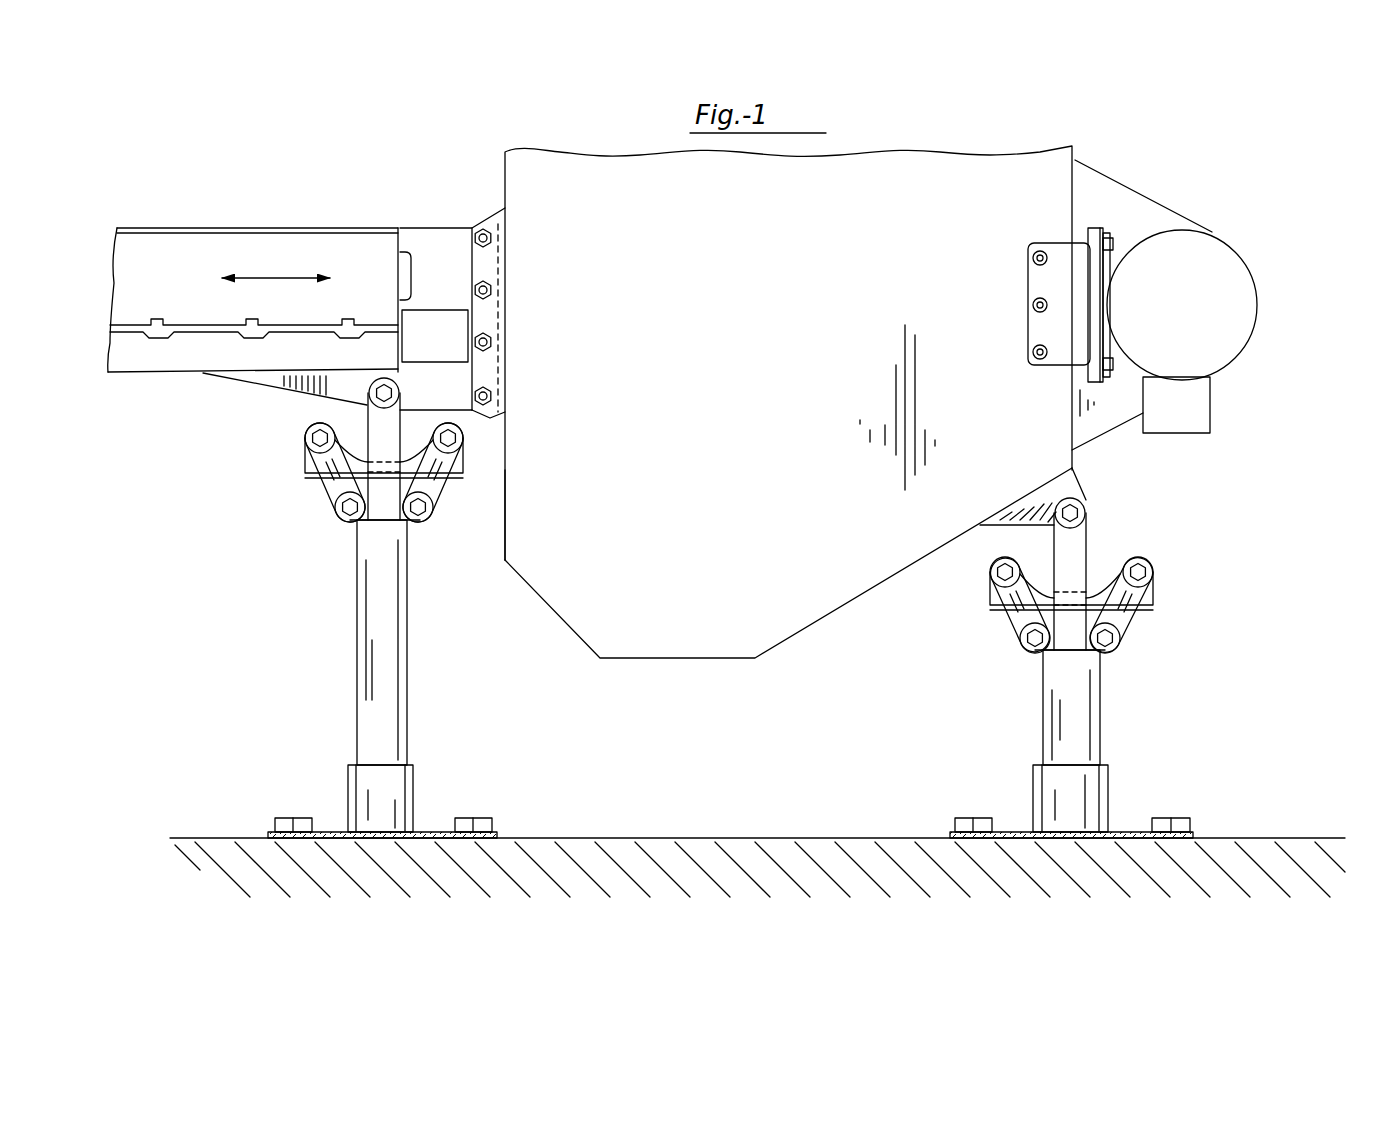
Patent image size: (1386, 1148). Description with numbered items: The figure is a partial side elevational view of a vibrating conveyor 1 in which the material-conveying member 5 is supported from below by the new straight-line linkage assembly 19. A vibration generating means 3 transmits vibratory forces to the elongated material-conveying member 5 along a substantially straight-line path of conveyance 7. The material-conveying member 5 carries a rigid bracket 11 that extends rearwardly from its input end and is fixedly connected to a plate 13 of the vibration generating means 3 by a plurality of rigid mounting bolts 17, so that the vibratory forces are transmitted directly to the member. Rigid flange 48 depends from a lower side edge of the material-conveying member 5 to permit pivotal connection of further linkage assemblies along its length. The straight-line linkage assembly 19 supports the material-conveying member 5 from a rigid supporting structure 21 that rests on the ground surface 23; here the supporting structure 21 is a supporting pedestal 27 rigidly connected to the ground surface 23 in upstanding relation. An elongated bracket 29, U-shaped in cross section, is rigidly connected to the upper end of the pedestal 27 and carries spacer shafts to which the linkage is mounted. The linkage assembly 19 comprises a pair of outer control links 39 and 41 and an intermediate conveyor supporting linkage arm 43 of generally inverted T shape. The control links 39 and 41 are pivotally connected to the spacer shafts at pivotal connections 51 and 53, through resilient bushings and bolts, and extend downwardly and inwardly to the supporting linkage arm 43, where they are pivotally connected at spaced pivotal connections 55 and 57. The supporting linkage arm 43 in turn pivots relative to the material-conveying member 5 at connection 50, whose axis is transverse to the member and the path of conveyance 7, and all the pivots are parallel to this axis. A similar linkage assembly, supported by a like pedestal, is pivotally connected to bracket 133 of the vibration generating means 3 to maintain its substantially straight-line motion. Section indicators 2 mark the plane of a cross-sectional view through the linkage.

The vibrating conveyor 1 is at (345, 200).
The section line 2- 2 is at (238, 62).
The vibration generating means 3 is at (746, 381).
The material-conveying member 5 is at (166, 242).
The path of conveyance 7 is at (250, 278).
The rigid bracket 11 is at (437, 230).
The plate 13 is at (490, 212).
The rigid mounting bolts 17 is at (490, 232).
The straight-line linkage assembly 19 is at (300, 478).
The rigid supporting structure 21 is at (300, 740).
The ground surface 23 is at (1238, 837).
The supporting pedestal 27 is at (412, 712).
The elongated bracket 29 is at (505, 514).
The outer control link 39 is at (337, 486).
The outer control link 41 is at (442, 497).
The conveyor supporting linkage arm 43 is at (382, 513).
The rigid flange 48 is at (162, 358).
The pivotal connection 50 is at (366, 387).
The pivotal connection 51 is at (306, 433).
The pivotal connection 53 is at (480, 432).
The pivotal connection 55 is at (342, 520).
The pivotal connection 57 is at (427, 527).
The bracket 133 is at (1086, 497).